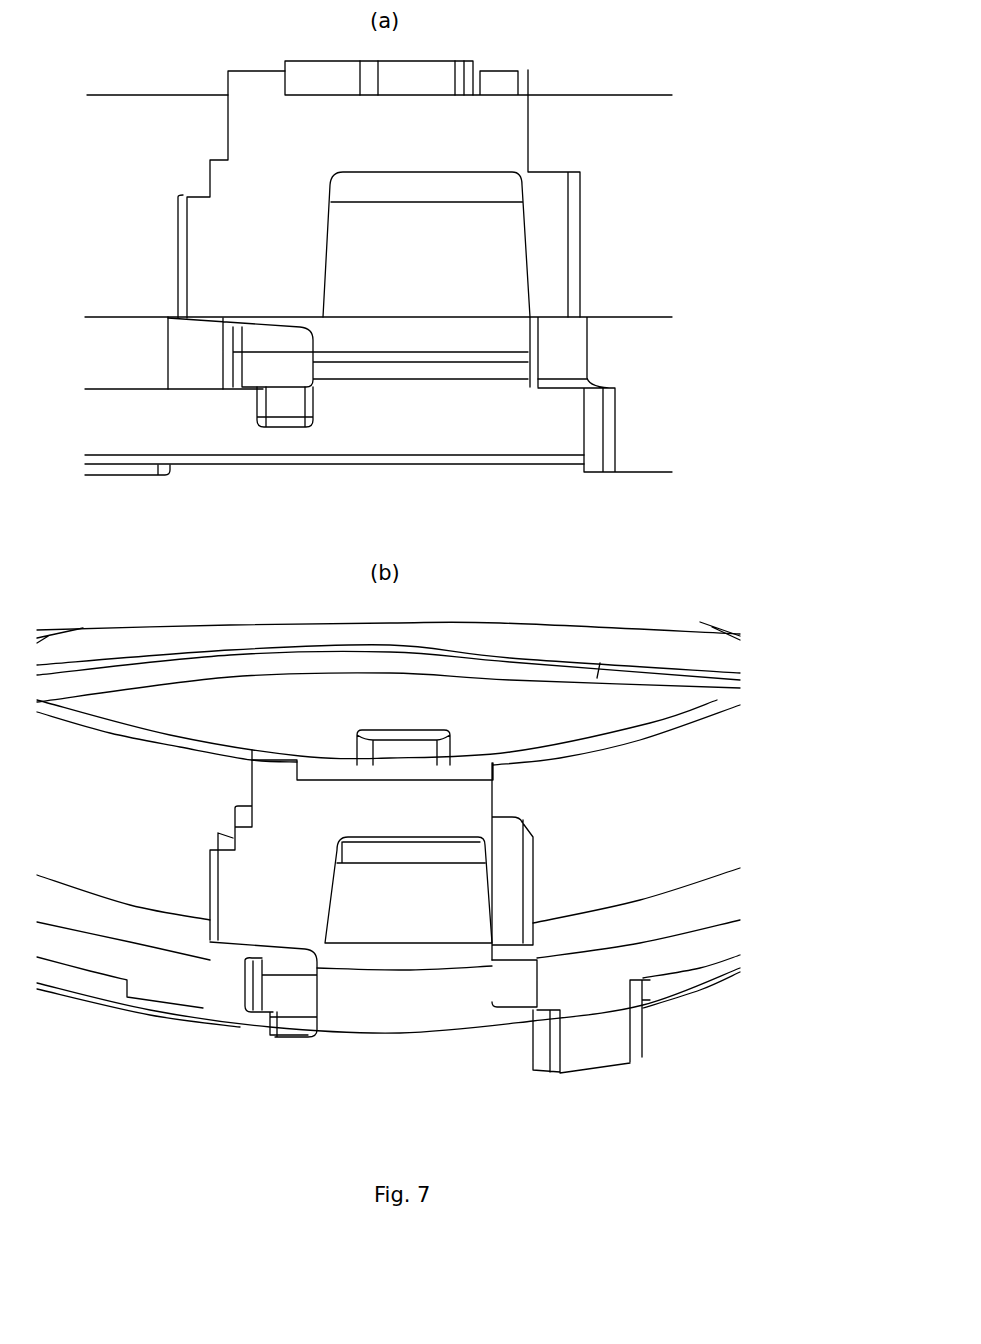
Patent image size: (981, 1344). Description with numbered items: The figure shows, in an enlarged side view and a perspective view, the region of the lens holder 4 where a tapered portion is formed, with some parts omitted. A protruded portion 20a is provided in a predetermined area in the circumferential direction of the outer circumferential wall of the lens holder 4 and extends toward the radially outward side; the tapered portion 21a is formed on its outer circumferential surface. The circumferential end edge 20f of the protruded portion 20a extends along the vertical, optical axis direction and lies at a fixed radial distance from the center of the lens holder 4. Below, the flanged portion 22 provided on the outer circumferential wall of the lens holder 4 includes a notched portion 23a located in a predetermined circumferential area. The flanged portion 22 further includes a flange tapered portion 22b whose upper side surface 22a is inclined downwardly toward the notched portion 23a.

The protruded portion 20a is at (265, 88).
The end edge 20f is at (177, 212).
The tapered portion 21a is at (467, 250).
The flanged portion 22 is at (633, 317).
The upper side surface 22a is at (122, 316).
The flange tapered portion 22b is at (238, 316).
The notched portion 23a is at (322, 444).
The lens holder 4 is at (698, 763).